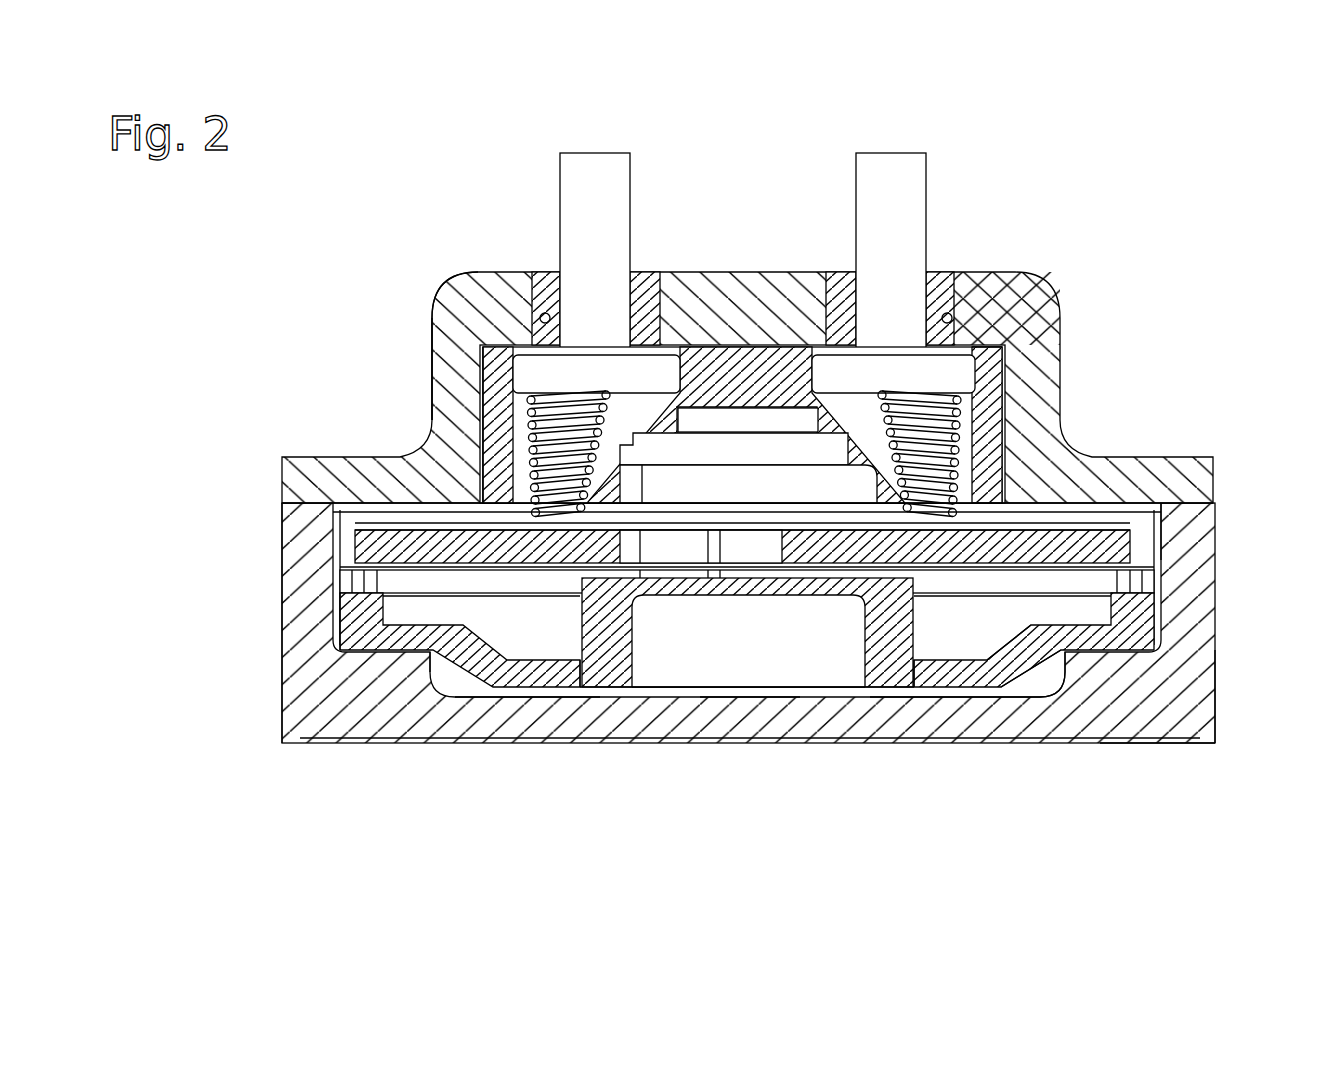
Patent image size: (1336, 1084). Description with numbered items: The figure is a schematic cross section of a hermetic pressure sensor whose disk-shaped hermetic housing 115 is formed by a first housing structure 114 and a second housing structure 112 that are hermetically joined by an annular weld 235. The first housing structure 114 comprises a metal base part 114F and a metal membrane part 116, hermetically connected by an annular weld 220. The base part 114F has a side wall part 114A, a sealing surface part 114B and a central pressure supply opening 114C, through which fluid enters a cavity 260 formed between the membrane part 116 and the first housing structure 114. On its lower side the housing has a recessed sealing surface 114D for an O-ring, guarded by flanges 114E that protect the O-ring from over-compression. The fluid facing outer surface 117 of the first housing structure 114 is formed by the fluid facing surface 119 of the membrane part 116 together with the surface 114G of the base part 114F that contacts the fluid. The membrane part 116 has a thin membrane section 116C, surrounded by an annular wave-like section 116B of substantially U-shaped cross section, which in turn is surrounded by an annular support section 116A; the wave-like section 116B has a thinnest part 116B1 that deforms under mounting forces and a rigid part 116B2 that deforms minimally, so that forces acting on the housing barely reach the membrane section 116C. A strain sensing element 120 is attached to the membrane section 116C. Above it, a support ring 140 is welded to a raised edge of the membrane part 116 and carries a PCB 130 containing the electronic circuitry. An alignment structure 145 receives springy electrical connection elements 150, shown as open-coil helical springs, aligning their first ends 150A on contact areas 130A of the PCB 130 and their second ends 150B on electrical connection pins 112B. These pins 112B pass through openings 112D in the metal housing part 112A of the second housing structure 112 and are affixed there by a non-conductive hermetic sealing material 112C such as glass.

The second housing structure 112 is at (1017, 300).
The metal housing part 112A is at (455, 380).
The electrical connection pins 112B is at (873, 183).
The non-conductive hermetic sealing material 112C is at (545, 318).
The openings 112D is at (535, 330).
The first housing structure 114 is at (300, 713).
The side wall part 114A is at (300, 625).
The sealing surface part 114B is at (500, 737).
The pressure supply opening 114C is at (757, 727).
The sealing surface 114D is at (433, 745).
The flanges 114E is at (1207, 733).
The base part 114F is at (1180, 690).
The surface of the base part 114G is at (853, 703).
The hermetic housing 115 is at (440, 325).
The membrane part 116 is at (1138, 620).
The annular support section 116A is at (388, 642).
The annular wave-like section 116B is at (965, 645).
The thinnest part of the wave-like section 116B1 is at (1100, 645).
The rigid part of the wave-like section 116B2 is at (890, 633).
The membrane section 116C is at (840, 600).
The fluid facing outer surface 117 is at (627, 641).
The fluid facing surface of the membrane part 119 is at (749, 598).
The strain sensing element 120 is at (747, 694).
The PCB 130 is at (1132, 540).
The contact areas 130A is at (520, 528).
The support ring 140 is at (1143, 572).
The alignment structure 145 is at (492, 435).
The springy electrical connection elements 150 is at (1005, 395).
The first ends 150A is at (955, 518).
The second ends 150B is at (948, 378).
The annular weld 220 is at (1100, 640).
The annular weld 235 is at (1183, 475).
The cavity 260 is at (695, 650).